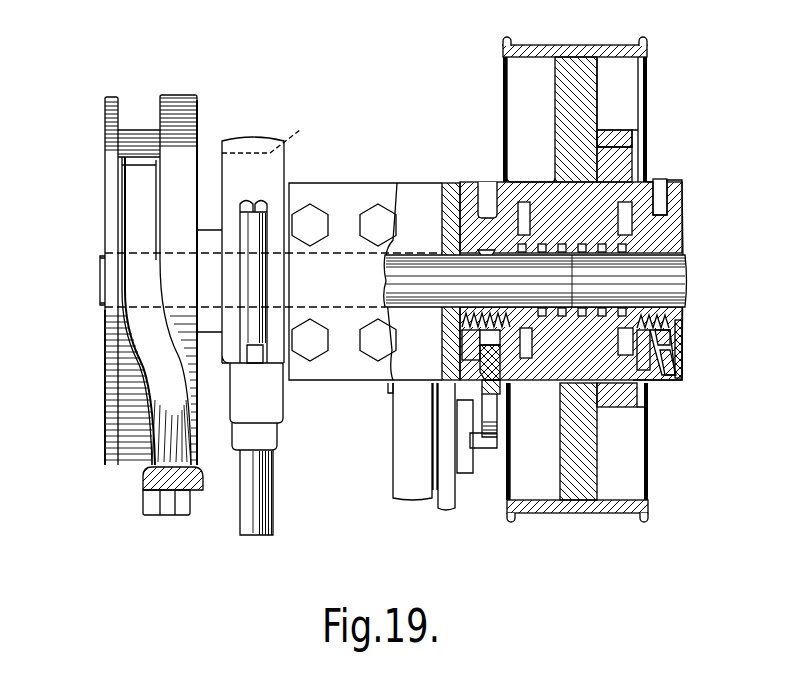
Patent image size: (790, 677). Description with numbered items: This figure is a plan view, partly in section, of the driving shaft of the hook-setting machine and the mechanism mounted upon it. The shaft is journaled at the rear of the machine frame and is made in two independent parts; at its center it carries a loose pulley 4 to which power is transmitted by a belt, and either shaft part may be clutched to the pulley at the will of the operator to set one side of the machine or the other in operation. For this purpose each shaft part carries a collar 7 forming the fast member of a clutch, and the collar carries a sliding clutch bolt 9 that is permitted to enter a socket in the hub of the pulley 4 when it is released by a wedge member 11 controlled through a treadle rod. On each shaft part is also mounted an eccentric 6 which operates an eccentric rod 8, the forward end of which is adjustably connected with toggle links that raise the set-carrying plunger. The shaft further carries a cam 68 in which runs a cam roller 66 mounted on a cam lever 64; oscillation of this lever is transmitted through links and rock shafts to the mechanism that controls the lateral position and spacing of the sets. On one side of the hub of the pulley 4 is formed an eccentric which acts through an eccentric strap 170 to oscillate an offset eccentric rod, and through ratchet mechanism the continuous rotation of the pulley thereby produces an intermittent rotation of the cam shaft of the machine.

The loose pulley 4 is at (648, 50).
The eccentric 6 is at (273, 280).
The collar 7 is at (467, 183).
The eccentric rod 8 is at (262, 505).
The sliding clutch bolt 9 is at (677, 343).
The wedge member 11 is at (502, 390).
The cam lever 64 is at (176, 480).
The cam roller 66 is at (160, 448).
The cam 68 is at (118, 396).
The eccentric strap 170 is at (633, 140).